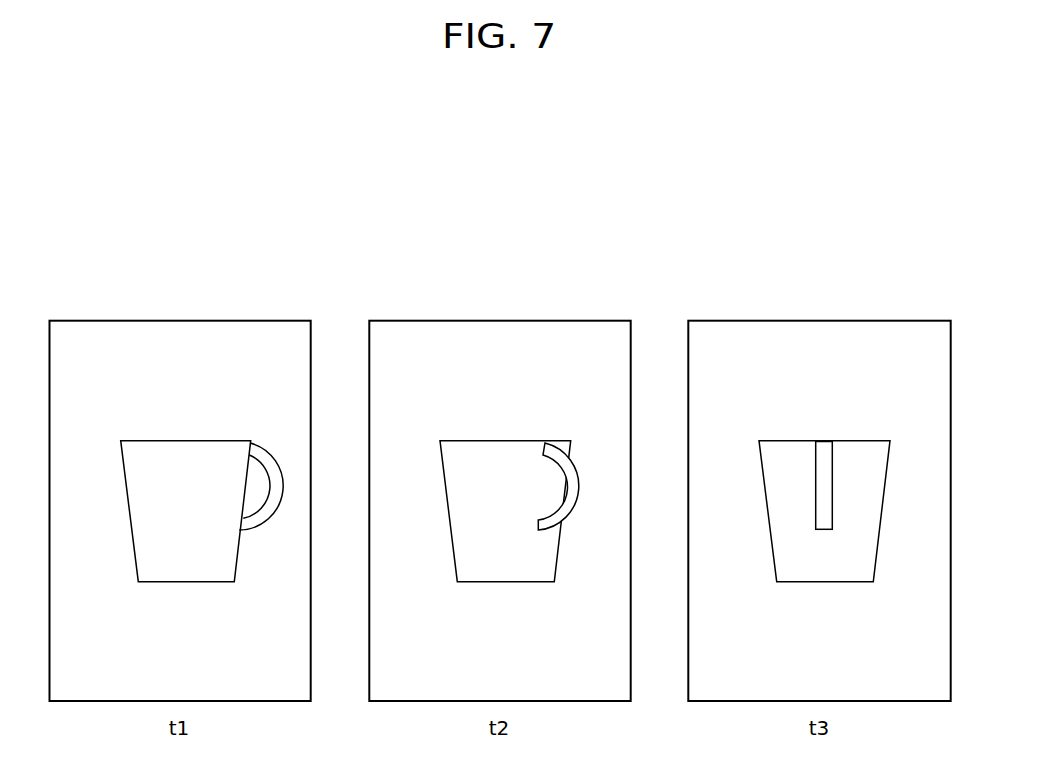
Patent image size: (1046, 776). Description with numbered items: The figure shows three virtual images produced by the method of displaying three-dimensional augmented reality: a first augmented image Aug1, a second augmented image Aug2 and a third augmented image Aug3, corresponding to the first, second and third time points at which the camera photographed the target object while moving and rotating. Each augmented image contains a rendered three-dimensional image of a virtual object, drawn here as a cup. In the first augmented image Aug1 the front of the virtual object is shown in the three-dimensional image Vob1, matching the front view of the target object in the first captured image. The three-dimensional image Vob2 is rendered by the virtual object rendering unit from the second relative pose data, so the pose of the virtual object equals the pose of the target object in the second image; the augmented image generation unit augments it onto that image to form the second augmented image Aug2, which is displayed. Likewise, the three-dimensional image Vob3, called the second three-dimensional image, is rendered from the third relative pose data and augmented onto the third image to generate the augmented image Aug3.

The first augmented image Aug1 is at (180, 496).
The second augmented image Aug2 is at (499, 496).
The third augmented image Aug3 is at (819, 496).
The 3D image of virtual object Vob1 is at (137, 512).
The 3D image of virtual object Vob2 is at (456, 512).
The second 3D image of virtual object Vob3 is at (775, 512).